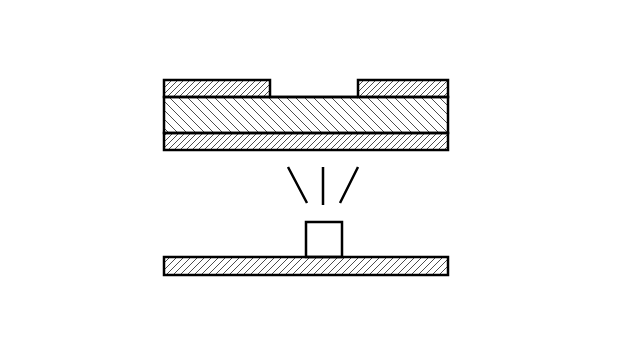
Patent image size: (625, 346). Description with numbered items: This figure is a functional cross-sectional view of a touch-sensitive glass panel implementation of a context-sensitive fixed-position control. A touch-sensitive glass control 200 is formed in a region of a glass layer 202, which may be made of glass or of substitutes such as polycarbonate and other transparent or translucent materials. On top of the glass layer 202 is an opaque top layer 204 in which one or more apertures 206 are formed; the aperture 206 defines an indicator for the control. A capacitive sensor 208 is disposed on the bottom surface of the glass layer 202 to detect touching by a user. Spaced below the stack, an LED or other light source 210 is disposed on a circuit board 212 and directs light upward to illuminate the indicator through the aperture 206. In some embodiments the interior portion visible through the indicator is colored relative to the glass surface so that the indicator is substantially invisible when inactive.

The touch-sensitive glass control 200 is at (98, 128).
The glass layer 202 is at (448, 117).
The opaque top layer 204 is at (187, 80).
The aperture 206 is at (345, 82).
The capacitive sensor 208 is at (164, 138).
The light source 210 is at (338, 233).
The circuit board 212 is at (165, 262).